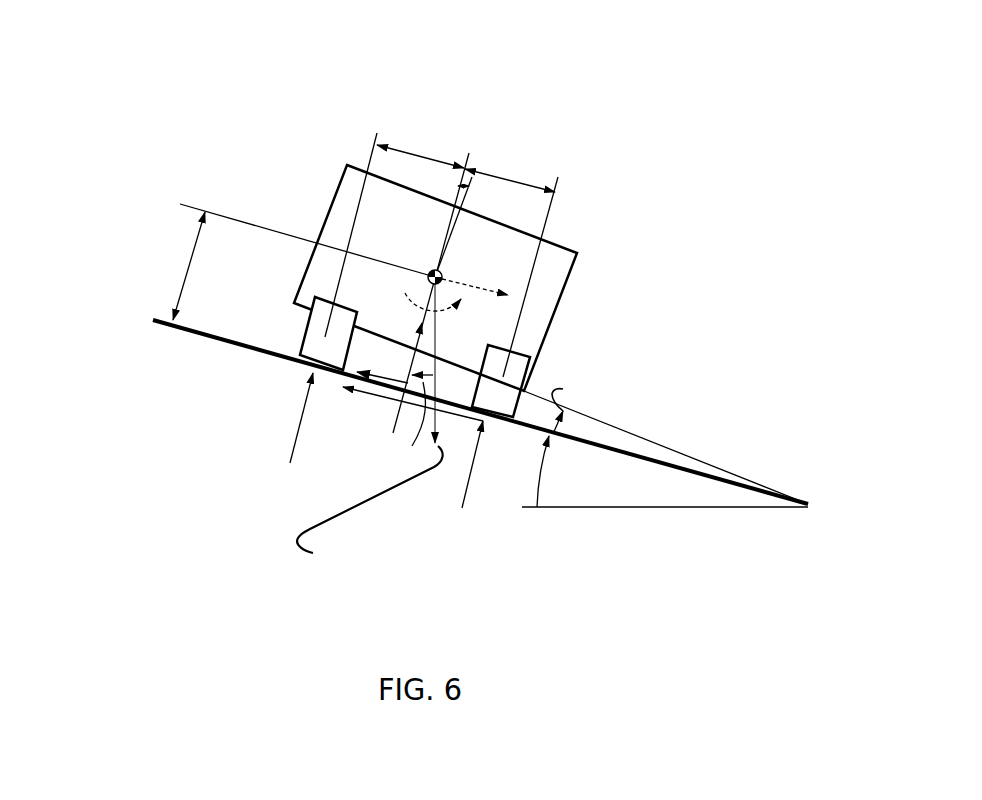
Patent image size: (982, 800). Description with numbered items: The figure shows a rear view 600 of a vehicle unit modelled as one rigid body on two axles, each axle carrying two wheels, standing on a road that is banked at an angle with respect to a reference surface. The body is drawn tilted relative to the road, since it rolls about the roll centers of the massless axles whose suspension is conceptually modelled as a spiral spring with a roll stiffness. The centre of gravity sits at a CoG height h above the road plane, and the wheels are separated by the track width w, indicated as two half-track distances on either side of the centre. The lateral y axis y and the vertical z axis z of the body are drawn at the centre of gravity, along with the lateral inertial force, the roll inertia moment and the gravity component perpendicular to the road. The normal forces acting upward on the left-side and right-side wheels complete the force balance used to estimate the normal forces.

The rear view of a vehicle 600 is at (138, 72).
The CoG height h is at (304, 262).
The track width w is at (466, 155).
The y-axis y is at (382, 362).
The z-axis z is at (407, 320).